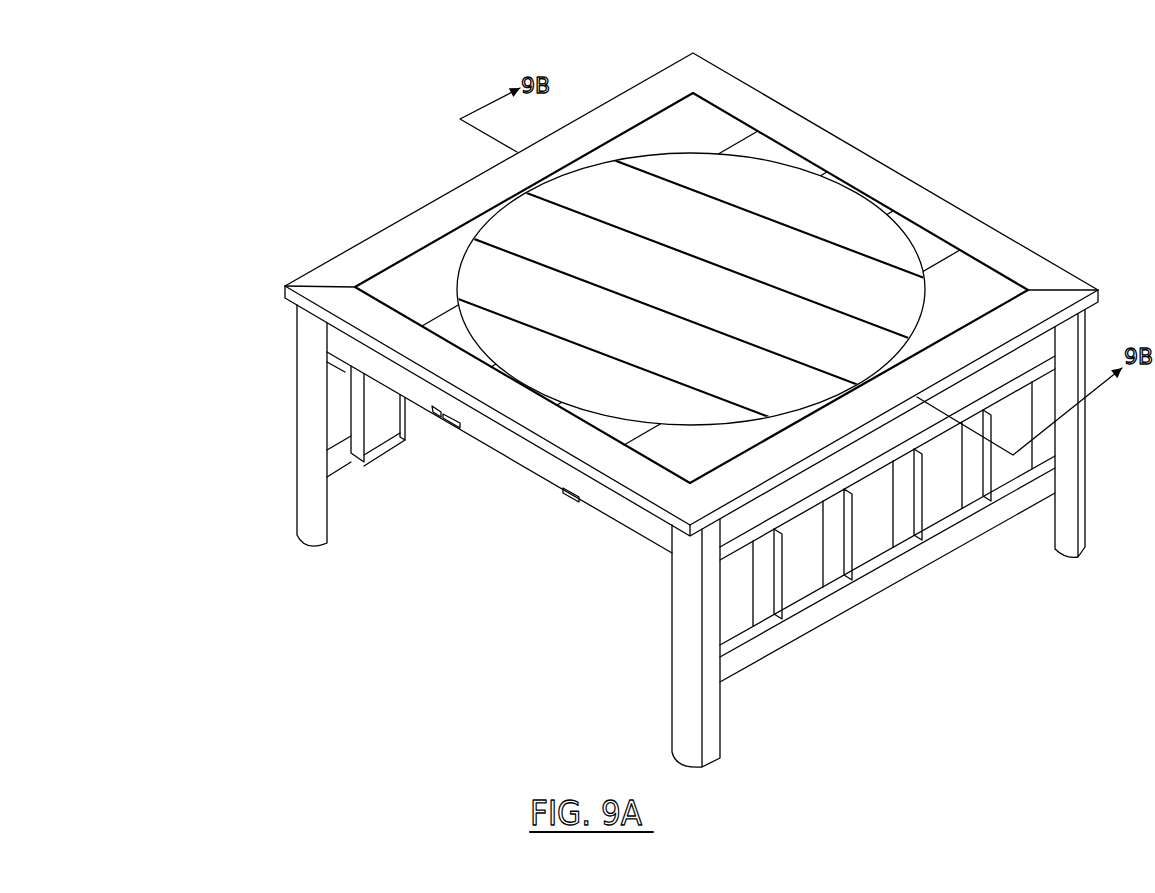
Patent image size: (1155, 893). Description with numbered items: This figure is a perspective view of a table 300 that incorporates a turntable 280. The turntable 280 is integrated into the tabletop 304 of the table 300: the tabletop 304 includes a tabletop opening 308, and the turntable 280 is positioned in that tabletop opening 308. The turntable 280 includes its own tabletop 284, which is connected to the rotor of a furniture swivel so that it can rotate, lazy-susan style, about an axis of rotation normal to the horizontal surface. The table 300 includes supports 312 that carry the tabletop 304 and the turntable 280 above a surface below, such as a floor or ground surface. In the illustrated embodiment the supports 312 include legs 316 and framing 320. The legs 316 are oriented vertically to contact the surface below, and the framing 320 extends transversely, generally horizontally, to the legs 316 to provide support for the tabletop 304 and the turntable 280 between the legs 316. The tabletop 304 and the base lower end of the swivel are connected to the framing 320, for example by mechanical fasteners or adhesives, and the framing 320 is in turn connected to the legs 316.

The table 300 is at (631, 398).
The tabletop 304 is at (995, 288).
The tabletop opening 308 is at (762, 158).
The turntable 280 is at (858, 207).
The tabletop 284 is at (908, 253).
The supports 312 is at (621, 539).
The legs 316 is at (313, 533).
The framing 320 is at (605, 502).